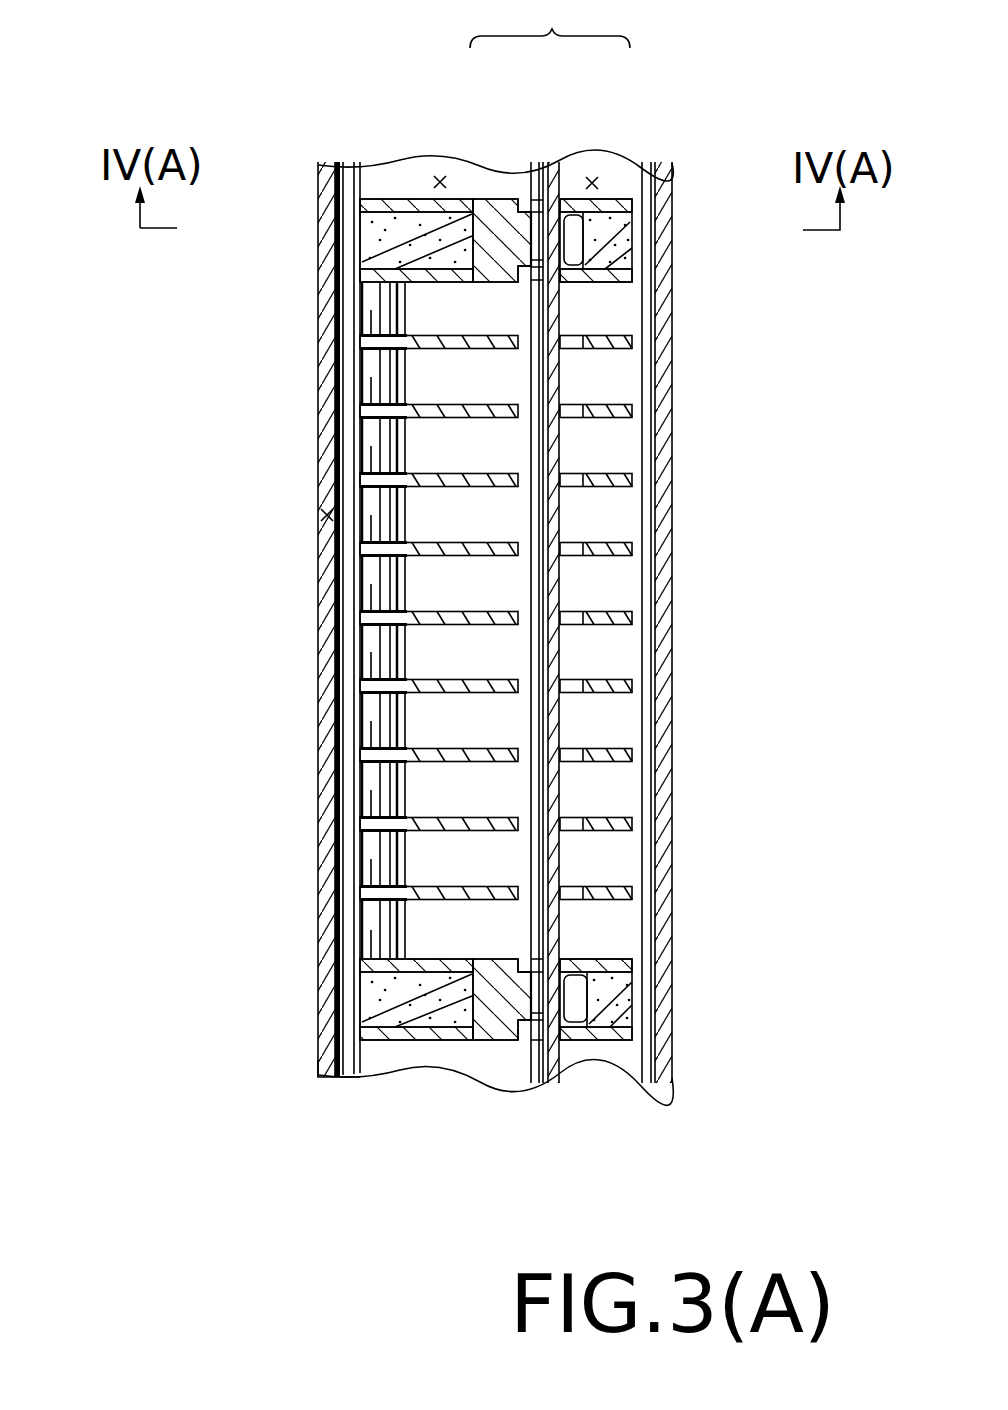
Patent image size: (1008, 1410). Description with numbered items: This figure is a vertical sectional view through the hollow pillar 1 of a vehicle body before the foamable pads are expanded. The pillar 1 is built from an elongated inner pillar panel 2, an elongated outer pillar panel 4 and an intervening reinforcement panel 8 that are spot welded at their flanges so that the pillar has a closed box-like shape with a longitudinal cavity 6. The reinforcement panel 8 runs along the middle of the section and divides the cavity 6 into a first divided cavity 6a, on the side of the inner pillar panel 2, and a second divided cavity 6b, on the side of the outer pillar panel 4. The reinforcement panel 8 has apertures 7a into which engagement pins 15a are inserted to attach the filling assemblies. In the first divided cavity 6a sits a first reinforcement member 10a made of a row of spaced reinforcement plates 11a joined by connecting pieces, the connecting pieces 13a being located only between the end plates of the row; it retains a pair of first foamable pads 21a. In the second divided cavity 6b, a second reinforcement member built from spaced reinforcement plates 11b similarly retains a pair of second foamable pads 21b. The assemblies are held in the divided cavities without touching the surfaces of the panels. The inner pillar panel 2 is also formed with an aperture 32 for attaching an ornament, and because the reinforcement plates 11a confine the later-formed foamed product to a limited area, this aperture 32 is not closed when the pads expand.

The pillar 1 is at (318, 283).
The inner pillar panel 2 is at (318, 1047).
The outer pillar panel 4 is at (677, 1052).
The cavity 6 is at (550, 24).
The first divided cavity 6a is at (440, 182).
The second divided cavity 6b is at (592, 183).
The apertures 7a is at (517, 247).
The reinforcement panel 8 is at (538, 1062).
The first reinforcement member 10a is at (388, 1050).
The reinforcement plates 11a is at (403, 197).
The reinforcement plates 11b is at (600, 200).
The connecting pieces 13a is at (493, 237).
The engagement pins 15a is at (592, 238).
The first foamable pads 21a is at (355, 242).
The second foamable pads 21b is at (637, 247).
The apertures 32 is at (327, 515).